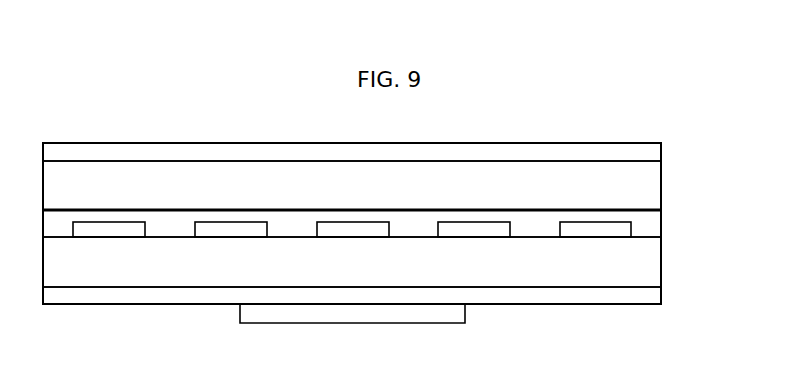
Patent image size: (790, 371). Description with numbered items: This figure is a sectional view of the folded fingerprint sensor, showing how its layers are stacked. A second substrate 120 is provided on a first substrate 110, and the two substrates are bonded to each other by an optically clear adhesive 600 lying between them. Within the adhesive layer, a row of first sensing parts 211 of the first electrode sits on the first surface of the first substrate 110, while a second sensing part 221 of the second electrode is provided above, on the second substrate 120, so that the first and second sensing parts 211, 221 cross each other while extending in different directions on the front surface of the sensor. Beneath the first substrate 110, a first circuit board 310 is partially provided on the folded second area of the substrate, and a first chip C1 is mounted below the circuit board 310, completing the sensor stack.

The second sensing part 221 is at (663, 148).
The second substrate 120 is at (663, 183).
The optically clear adhesive 600 is at (663, 222).
The first sensing part 211 is at (113, 231).
The first substrate 110 is at (663, 263).
The first circuit board 310 is at (663, 297).
The first chip C1 is at (466, 310).